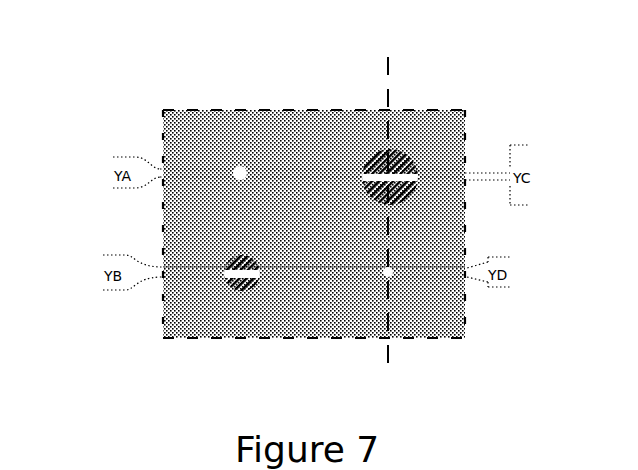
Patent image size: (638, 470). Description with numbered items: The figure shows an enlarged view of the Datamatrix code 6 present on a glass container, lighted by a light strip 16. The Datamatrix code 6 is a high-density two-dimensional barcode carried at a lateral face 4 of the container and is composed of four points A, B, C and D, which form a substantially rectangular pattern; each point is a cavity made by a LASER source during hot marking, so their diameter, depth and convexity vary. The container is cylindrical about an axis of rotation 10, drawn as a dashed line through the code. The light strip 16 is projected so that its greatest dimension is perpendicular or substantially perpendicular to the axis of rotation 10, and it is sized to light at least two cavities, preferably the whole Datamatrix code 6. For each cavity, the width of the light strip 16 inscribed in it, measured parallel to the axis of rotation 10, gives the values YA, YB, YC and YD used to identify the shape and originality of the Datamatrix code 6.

The lateral face 4 is at (394, 308).
The Datamatrix code 6 is at (186, 110).
The axis of rotation 10 is at (387, 98).
The light strip 16 is at (307, 220).
The point A is at (240, 173).
The point B is at (232, 288).
The point C is at (400, 152).
The point D is at (390, 272).